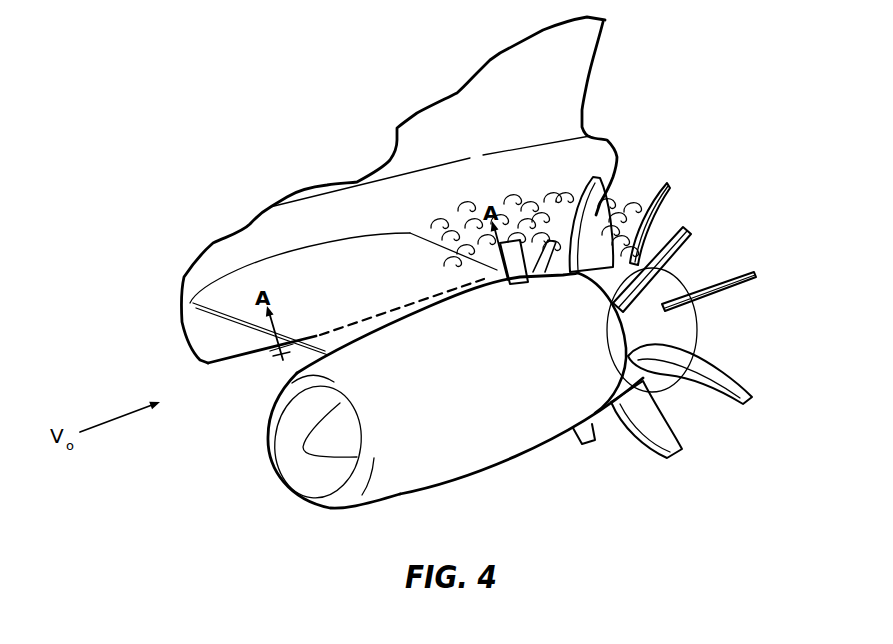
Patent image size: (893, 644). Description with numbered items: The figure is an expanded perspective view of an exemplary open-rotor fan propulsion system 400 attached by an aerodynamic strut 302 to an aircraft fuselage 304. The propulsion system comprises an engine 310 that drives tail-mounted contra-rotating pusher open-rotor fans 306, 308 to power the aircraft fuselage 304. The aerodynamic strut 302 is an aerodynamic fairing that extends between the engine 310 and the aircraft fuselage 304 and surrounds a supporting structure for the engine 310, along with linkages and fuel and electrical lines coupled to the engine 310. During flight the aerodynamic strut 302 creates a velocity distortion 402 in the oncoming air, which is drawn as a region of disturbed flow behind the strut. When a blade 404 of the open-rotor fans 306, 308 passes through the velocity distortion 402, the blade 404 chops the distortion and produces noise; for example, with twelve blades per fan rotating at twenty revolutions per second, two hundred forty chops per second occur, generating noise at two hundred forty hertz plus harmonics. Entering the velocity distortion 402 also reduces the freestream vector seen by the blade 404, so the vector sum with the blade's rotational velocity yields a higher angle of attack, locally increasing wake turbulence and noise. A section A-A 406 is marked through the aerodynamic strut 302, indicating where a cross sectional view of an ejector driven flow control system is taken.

The open-rotor fan propulsion system 400 is at (226, 114).
The aerodynamic strut 302 is at (270, 262).
The aircraft fuselage 304 is at (322, 205).
The open-rotor fan 306 is at (556, 198).
The open-rotor fan 308 is at (690, 244).
The engine 310 is at (450, 456).
The velocity distortion 402 is at (538, 188).
The blade 404 is at (470, 263).
The section A-A 406 is at (347, 325).